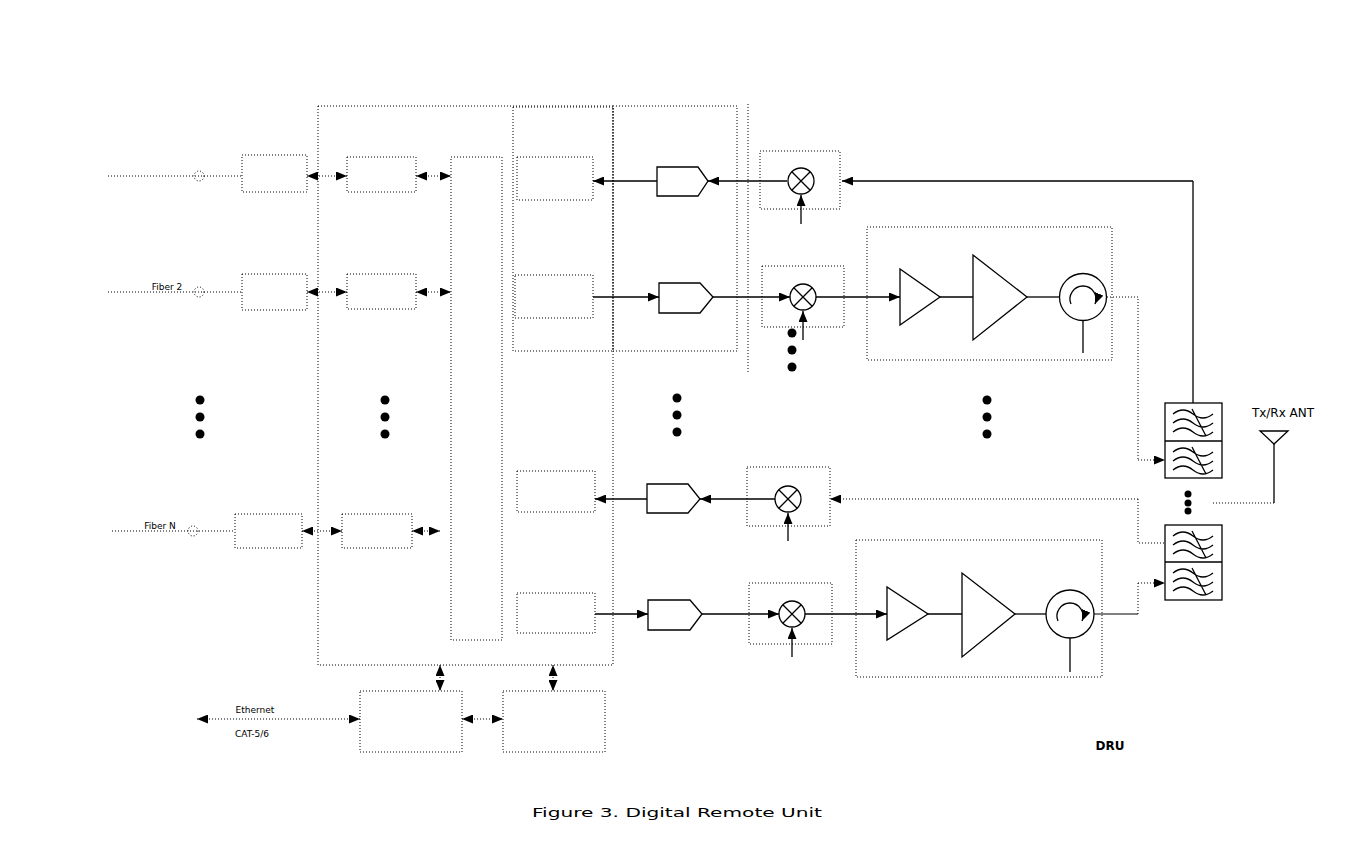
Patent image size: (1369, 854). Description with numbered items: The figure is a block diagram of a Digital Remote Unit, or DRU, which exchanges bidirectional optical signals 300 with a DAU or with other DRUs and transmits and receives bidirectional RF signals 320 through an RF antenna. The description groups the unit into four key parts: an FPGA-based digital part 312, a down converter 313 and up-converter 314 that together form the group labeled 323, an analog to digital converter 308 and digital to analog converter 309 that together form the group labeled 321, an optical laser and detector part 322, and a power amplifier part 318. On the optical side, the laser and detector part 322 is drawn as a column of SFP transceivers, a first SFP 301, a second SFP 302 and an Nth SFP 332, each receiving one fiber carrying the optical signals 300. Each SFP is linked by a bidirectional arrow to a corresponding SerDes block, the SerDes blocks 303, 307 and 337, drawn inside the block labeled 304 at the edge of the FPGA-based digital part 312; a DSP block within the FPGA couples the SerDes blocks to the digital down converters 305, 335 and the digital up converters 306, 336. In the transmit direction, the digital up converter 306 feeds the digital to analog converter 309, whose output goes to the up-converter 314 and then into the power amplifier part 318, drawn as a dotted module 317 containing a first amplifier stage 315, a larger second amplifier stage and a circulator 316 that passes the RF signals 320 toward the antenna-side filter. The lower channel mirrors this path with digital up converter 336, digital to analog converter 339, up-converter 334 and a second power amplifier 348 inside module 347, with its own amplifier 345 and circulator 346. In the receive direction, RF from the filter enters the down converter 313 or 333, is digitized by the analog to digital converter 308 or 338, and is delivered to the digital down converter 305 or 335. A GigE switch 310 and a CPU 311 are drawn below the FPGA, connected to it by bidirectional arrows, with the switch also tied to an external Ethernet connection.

The bidirectional optical signals 300 is at (175, 159).
The SFP1 optical transceiver 301 is at (274, 161).
The SFP2 optical transceiver 302 is at (274, 279).
The SerDes 303 is at (381, 164).
The SerDes block 304 is at (364, 353).
The digital down converter DDC 305 is at (555, 169).
The digital up converter DUC 306 is at (554, 287).
The SerDes 307 is at (381, 302).
The analog to digital converter 308 is at (682, 169).
The digital to analog converter 309 is at (686, 300).
The GigE switch 310 is at (404, 719).
The CPU 311 is at (563, 719).
The FPGA-based digital part 312 is at (465, 385).
The down converter 313 is at (800, 176).
The up-converter 314 is at (803, 295).
The amplifier 315 is at (920, 308).
The circulator 316 is at (1080, 314).
The power amplifier module 317 is at (989, 285).
The power amplifier part 318 is at (1000, 292).
The bidirectional RF signals 320 is at (1194, 429).
The analog to digital and digital to analog converter group 321 is at (640, 189).
The optical laser and detector part 322 is at (299, 172).
The down converter and up-converter group 323 is at (859, 190).
The SFPN optical transceiver 332 is at (268, 518).
The down converter DNC 333 is at (788, 493).
The up converter UPC 334 is at (790, 613).
The digital down converter DDC 335 is at (556, 484).
The digital up converter DUC 336 is at (556, 603).
The SerDes 337 is at (377, 542).
The analog to digital converter ADC 338 is at (673, 487).
The digital to analog converter DAC 339 is at (675, 618).
The amplifier 345 is at (907, 626).
The circulator 346 is at (1067, 631).
The power amplifier module 347 is at (979, 603).
The power amplifier 348 is at (988, 610).